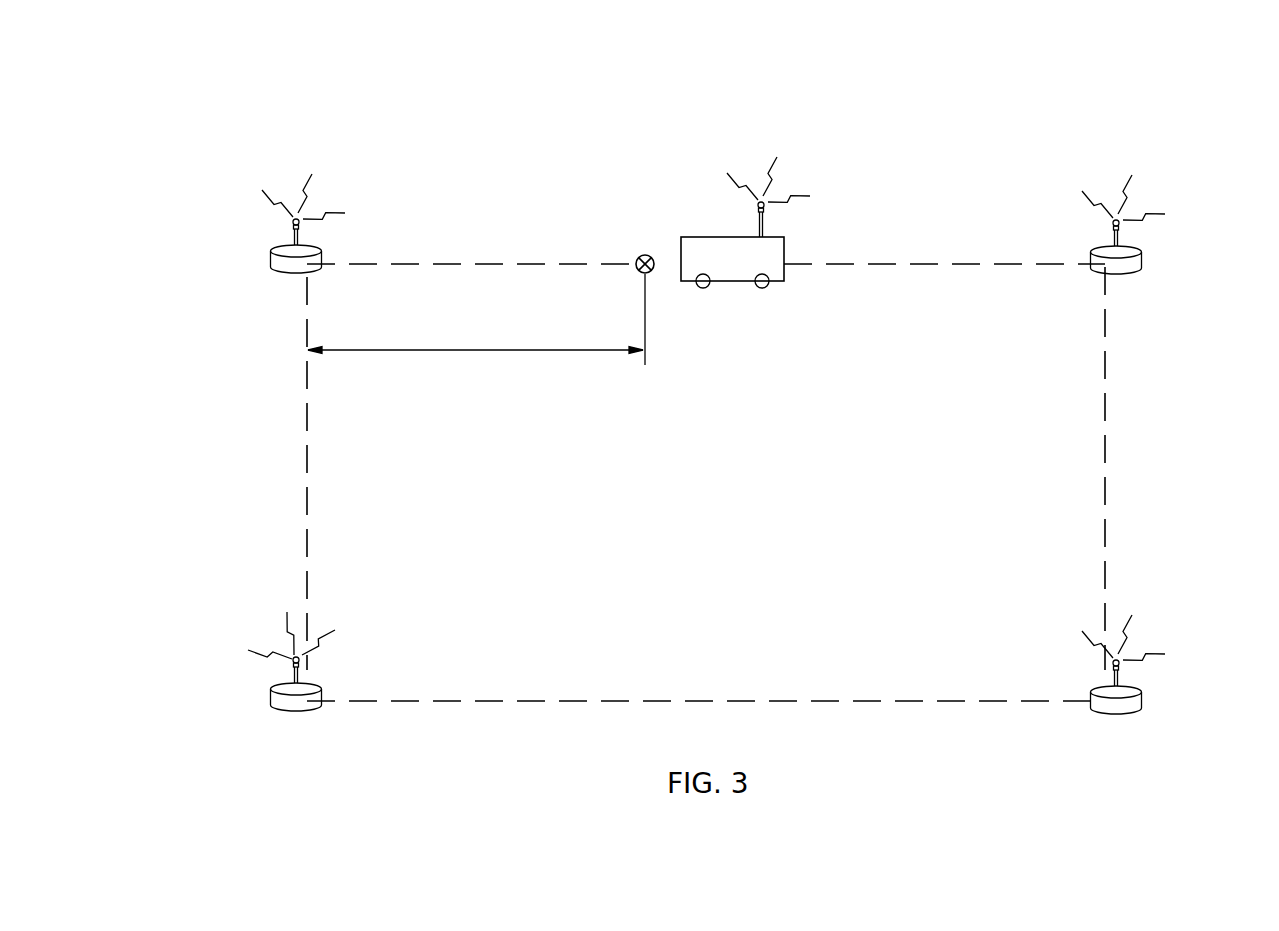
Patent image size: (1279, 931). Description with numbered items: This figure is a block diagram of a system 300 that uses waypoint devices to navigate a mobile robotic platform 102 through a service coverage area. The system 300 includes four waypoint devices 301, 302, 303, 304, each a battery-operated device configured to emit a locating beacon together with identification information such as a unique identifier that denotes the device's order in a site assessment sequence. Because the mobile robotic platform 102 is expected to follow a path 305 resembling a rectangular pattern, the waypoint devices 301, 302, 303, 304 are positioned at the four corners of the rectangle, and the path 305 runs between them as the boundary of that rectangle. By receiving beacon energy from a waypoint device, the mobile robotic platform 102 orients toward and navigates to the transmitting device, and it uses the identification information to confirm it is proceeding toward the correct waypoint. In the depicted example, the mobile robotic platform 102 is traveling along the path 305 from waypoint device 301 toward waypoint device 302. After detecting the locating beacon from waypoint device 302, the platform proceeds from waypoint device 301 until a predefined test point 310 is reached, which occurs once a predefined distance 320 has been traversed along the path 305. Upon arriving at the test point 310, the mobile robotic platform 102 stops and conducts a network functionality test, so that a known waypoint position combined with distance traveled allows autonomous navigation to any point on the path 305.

The system 300 is at (1218, 119).
The waypoint device 301 is at (272, 259).
The waypoint device 302 is at (1143, 262).
The waypoint device 303 is at (1143, 699).
The waypoint device 304 is at (270, 697).
The path 305 is at (305, 478).
The test point 310 is at (641, 255).
The distance 320 is at (484, 352).
The mobile robotic platform 102 is at (703, 237).